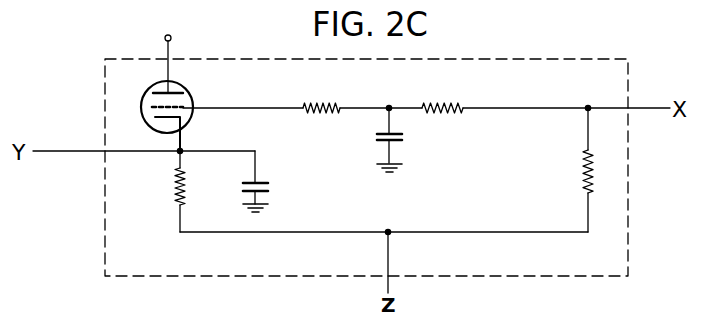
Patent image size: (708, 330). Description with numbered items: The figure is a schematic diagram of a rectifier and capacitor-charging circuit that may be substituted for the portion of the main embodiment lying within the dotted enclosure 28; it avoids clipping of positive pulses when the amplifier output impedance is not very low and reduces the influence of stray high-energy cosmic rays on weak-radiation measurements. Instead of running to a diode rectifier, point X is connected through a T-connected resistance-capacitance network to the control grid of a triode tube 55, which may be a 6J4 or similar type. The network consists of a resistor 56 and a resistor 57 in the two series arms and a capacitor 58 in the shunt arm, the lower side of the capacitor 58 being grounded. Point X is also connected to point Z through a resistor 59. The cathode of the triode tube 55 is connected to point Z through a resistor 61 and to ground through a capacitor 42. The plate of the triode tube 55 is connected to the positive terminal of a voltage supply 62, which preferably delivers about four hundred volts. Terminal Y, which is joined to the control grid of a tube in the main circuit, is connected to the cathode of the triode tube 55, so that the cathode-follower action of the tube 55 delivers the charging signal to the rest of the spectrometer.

The dotted enclosure 28 is at (566, 58).
The capacitor 42 is at (262, 180).
The triode tube 55 is at (188, 94).
The resistor 56 is at (331, 104).
The resistor 57 is at (452, 104).
The capacitor 58 is at (395, 144).
The resistor 59 is at (580, 169).
The resistor 61 is at (172, 188).
The voltage supply 62 is at (164, 38).